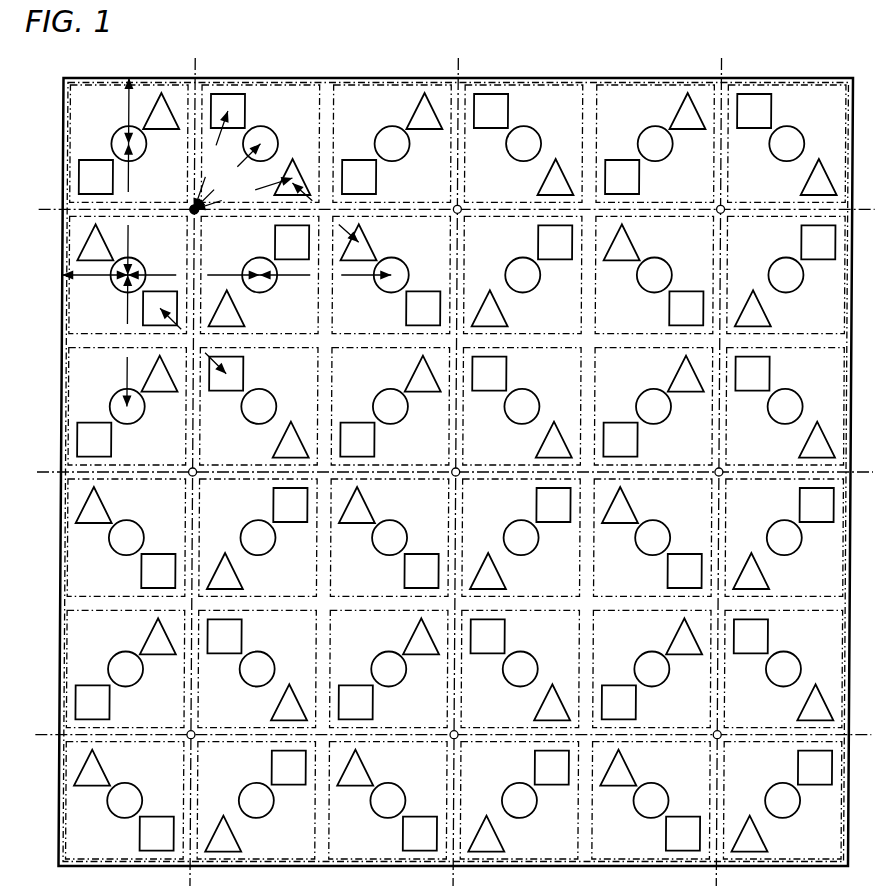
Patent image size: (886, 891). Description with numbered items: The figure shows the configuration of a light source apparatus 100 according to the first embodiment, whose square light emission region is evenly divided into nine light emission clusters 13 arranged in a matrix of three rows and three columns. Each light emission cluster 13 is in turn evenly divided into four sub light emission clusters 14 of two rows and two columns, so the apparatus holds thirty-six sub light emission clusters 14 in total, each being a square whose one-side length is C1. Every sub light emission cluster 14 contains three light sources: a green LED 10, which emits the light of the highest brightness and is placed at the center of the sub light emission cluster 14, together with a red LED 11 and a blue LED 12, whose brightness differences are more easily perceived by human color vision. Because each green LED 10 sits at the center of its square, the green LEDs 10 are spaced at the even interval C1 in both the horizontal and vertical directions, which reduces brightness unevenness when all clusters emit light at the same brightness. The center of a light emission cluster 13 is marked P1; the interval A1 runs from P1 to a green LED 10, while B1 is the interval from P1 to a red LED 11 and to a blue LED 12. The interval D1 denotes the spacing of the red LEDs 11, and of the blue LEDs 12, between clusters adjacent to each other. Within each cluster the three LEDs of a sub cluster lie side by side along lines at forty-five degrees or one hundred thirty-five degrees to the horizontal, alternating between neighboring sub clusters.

The light source apparatus 100 is at (750, 78).
The light emission cluster 13 is at (129, 122).
The sub light emission cluster 14 is at (252, 85).
The green LED 10 is at (261, 293).
The red LED 11 is at (163, 131).
The blue LED 12 is at (158, 291).
The center of the light emission cluster P1 is at (197, 214).
The interval between the center of the light emission cluster and the green LED A1 is at (227, 177).
The interval between the center of the light emission cluster and the red or blue LE B1 is at (241, 162).
The interval of the green LEDs C1 is at (126, 117).
The interval of the red LEDs and of the blue LEDs between adjacent clusters D1 is at (259, 278).